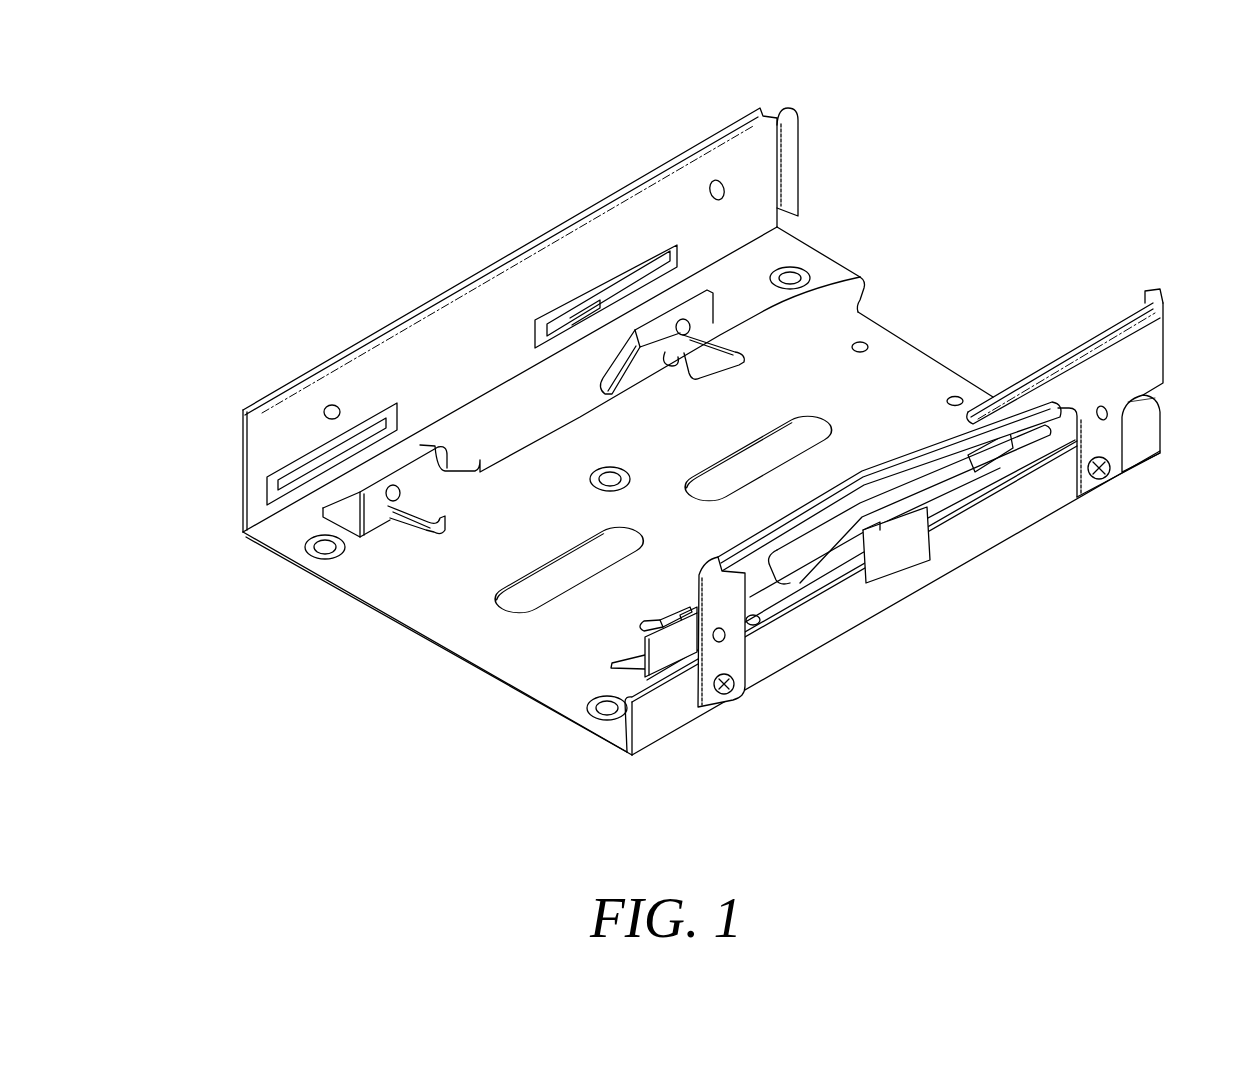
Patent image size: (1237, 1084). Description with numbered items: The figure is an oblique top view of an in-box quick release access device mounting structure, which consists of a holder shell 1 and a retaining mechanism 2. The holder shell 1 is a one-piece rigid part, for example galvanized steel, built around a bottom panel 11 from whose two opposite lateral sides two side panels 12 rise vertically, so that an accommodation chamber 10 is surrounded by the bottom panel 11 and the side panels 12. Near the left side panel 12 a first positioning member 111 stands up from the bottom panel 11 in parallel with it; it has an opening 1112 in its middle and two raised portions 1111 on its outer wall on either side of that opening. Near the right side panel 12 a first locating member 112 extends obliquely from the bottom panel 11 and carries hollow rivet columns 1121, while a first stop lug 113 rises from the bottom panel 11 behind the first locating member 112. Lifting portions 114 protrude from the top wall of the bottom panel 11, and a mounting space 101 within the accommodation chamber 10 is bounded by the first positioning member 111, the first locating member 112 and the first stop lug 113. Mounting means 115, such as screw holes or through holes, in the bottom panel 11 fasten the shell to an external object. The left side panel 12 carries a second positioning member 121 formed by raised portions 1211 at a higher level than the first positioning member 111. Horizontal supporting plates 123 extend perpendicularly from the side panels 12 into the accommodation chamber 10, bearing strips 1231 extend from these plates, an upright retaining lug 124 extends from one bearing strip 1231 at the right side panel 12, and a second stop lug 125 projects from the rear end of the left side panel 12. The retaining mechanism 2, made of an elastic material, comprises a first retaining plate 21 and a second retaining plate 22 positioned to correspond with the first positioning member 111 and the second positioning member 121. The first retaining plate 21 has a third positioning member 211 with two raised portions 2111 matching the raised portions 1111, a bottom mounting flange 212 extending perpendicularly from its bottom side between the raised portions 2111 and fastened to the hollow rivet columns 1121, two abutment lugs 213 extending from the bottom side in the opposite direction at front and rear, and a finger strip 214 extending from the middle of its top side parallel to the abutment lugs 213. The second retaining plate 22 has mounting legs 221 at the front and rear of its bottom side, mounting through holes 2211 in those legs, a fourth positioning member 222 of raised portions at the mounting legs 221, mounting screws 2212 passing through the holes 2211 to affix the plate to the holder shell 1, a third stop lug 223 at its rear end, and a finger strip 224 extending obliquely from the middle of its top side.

The holder shell 1 is at (705, 488).
The accommodation chamber 10 is at (668, 488).
The bottom panel 11 is at (641, 501).
The mounting space 101 is at (455, 608).
The first positioning member 111 is at (380, 515).
The raised portions 1111 is at (330, 538).
The opening 1112 is at (632, 345).
The first locating member 112 is at (892, 655).
The hollow rivet columns 1121 is at (687, 615).
The first stop lug 113 is at (990, 472).
The lifting portions 114 is at (862, 283).
The mounting means 115 is at (593, 713).
The side panels 12 is at (523, 320).
The second positioning member 121 is at (295, 415).
The raised portions 1211 is at (328, 412).
The horizontal supporting plates 123 is at (293, 485).
The bearing strips 1231 is at (378, 415).
The upright retaining lug 124 is at (753, 622).
The second stop lug 125 is at (787, 158).
The retaining mechanism 2 is at (855, 557).
The first retaining plate 21 is at (776, 620).
The third positioning member 211 is at (590, 811).
The raised portions 2111 is at (660, 640).
The bottom mounting flange 212 is at (645, 618).
The abutment lugs 213 is at (962, 493).
The finger strip 214 is at (837, 550).
The second retaining plate 22 is at (1155, 348).
The mounting legs 221 is at (738, 668).
The mounting through holes 2211 is at (727, 700).
The mounting screws 2212 is at (1108, 478).
The fourth positioning member 222 is at (1120, 396).
The third stop lug 223 is at (1163, 294).
The finger strip 224 is at (960, 397).